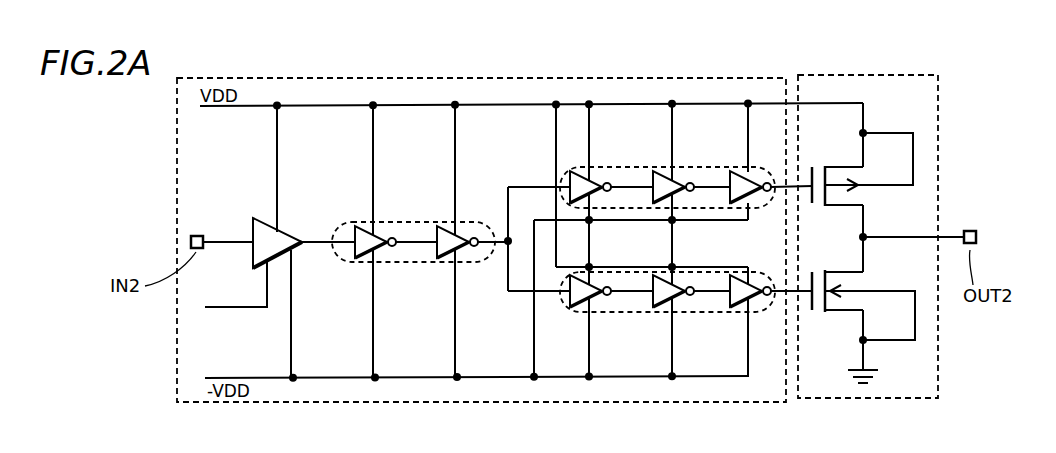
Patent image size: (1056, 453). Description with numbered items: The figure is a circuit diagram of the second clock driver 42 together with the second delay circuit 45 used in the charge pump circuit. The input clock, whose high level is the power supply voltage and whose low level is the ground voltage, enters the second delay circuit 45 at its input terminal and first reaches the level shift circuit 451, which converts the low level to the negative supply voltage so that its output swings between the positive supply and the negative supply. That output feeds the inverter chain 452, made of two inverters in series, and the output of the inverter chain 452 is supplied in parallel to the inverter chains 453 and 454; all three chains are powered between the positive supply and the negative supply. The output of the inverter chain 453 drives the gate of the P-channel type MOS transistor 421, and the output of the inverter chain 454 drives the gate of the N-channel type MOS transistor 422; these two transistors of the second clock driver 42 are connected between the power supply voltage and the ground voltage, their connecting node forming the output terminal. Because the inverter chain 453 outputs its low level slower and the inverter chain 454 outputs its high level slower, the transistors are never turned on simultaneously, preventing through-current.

The second delay circuit 45 is at (410, 77).
The level shift circuit 451 is at (274, 262).
The inverter chain 452 is at (388, 263).
The inverter chain 453 is at (622, 167).
The inverter chain 454 is at (635, 304).
The second clock driver 42 is at (823, 76).
The P-channel type MOS transistor 421 is at (898, 133).
The N-channel type MOS transistor 422 is at (917, 318).